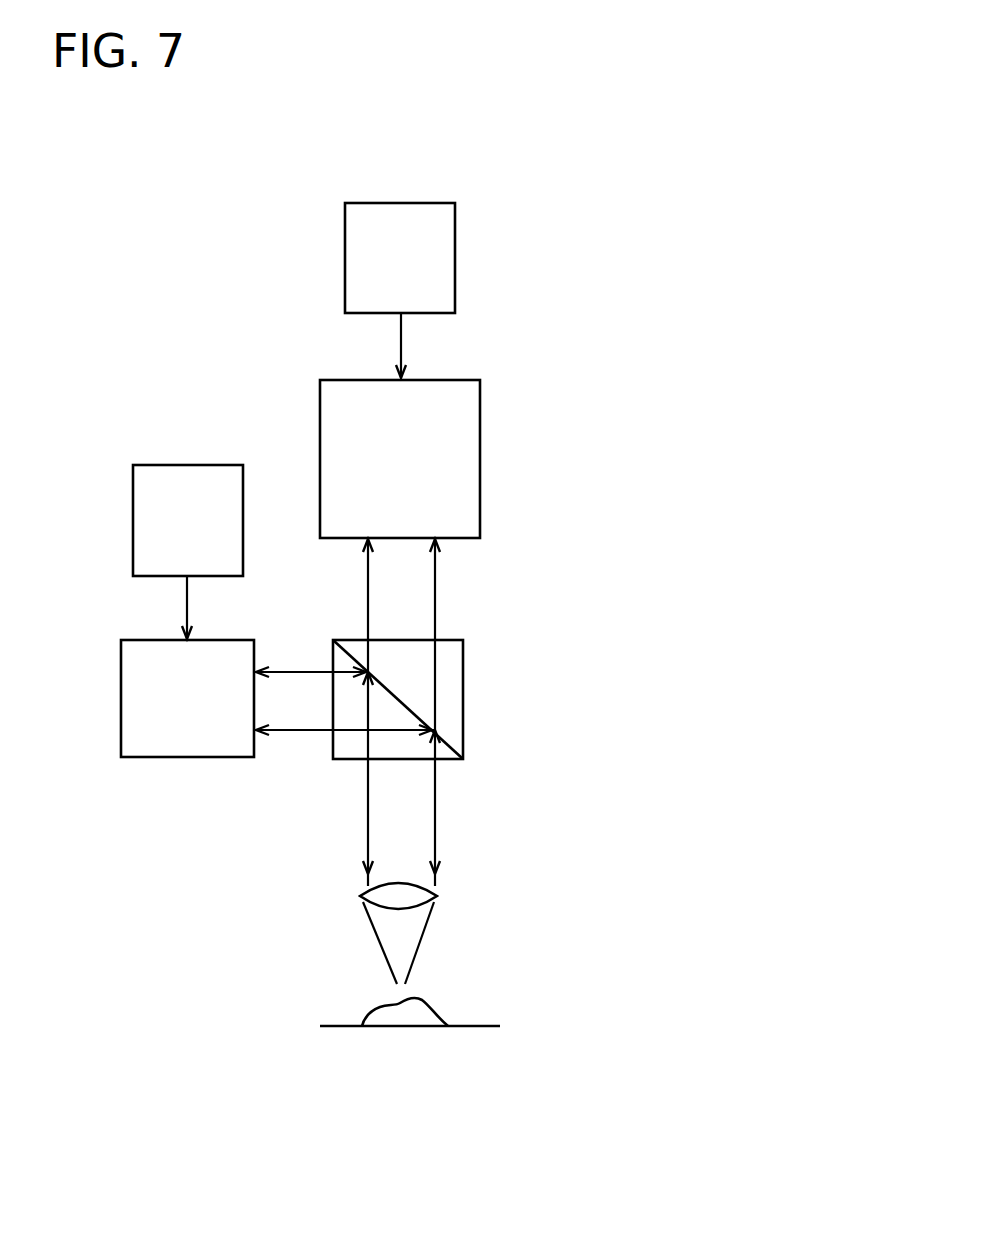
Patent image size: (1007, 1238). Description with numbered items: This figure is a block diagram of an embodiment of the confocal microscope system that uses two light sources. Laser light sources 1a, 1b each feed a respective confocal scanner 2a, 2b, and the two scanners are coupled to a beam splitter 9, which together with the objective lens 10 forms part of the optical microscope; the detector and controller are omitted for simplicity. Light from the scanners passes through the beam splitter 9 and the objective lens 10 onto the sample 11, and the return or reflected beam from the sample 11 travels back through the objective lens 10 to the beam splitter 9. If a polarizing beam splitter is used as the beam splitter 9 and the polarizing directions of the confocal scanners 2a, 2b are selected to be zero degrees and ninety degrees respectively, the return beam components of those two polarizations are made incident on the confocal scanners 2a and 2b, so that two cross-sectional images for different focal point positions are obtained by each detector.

The laser light source 1a is at (442, 279).
The laser light source 1b is at (153, 475).
The confocal scanner 2a is at (467, 470).
The confocal scanner 2b is at (153, 739).
The beam splitter 9 is at (465, 692).
The objective lens 10 is at (415, 897).
The sample 11 is at (420, 1015).